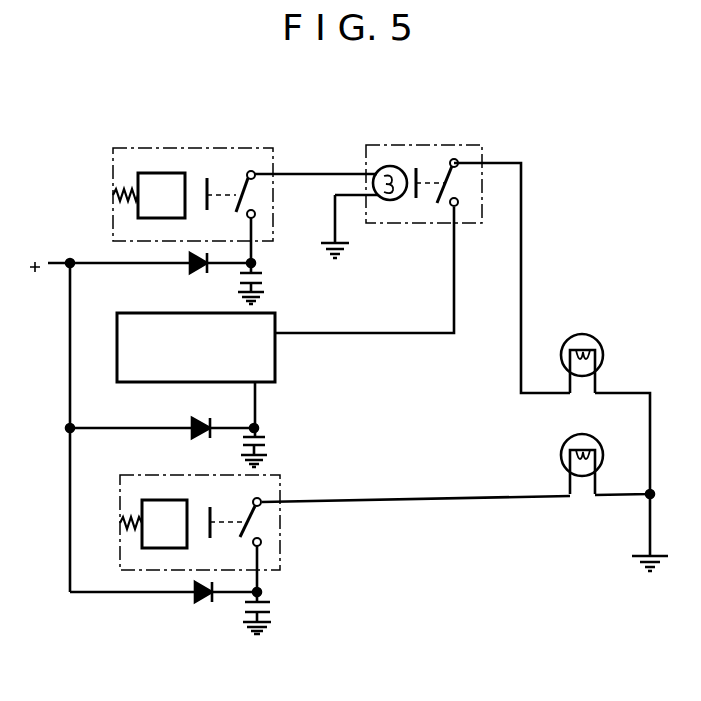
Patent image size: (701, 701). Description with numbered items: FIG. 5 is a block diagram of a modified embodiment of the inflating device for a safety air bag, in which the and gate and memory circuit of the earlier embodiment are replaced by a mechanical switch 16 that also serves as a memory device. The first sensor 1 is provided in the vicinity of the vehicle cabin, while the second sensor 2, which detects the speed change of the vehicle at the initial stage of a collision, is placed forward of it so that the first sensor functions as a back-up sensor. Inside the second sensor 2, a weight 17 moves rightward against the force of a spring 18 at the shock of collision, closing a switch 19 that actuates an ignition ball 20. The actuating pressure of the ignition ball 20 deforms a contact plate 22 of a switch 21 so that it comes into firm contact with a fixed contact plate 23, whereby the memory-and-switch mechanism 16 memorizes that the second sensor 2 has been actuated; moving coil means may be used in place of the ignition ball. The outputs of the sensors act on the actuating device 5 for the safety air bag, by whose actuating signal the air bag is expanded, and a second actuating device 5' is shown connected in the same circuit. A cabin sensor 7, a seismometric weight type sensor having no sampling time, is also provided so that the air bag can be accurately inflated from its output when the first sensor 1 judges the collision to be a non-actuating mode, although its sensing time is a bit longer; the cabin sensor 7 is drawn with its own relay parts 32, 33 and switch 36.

The first sensor 1 is at (277, 360).
The second sensor 2 is at (169, 161).
The actuating device 5 is at (563, 458).
The warning lamp 5' is at (570, 342).
The cabin sensor 7 is at (200, 562).
The mechanical switch 16 is at (427, 165).
The weight 17 is at (146, 173).
The spring 18 is at (114, 200).
The switch 19 is at (243, 187).
The ignition ball 20 is at (382, 169).
The switch 21 is at (459, 183).
The contact plate 22 is at (434, 196).
The fixed contact plate 23 is at (457, 206).
The relay of cabin sensor 32 is at (152, 500).
The relay coil of cabin sensor 33 is at (128, 520).
The relay switch of cabin sensor 36 is at (262, 525).